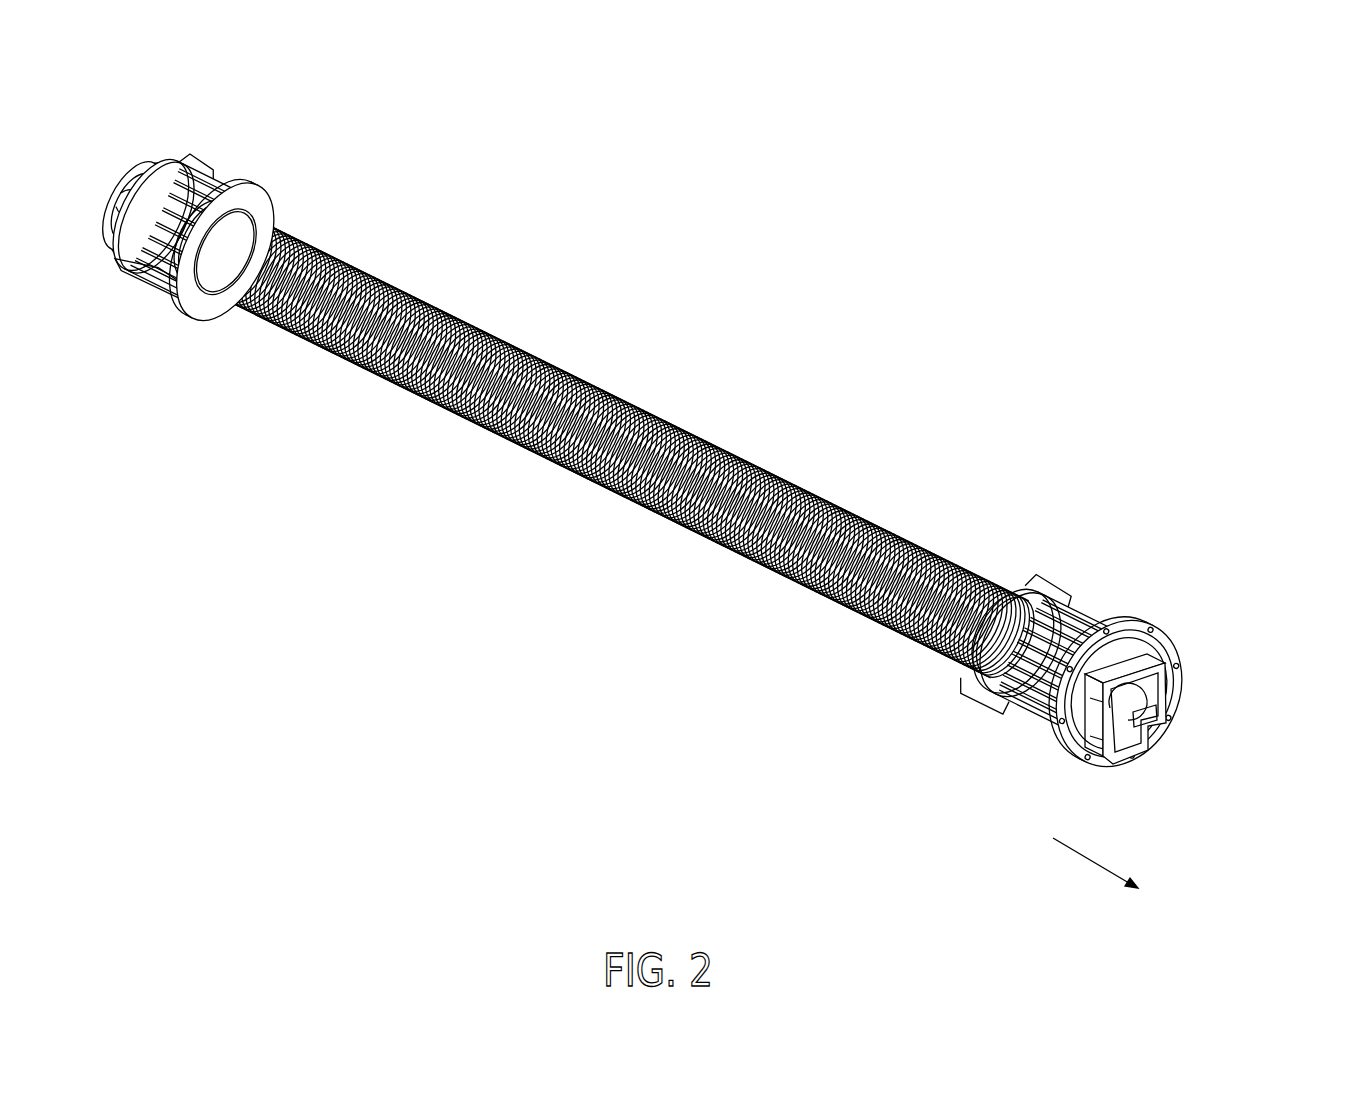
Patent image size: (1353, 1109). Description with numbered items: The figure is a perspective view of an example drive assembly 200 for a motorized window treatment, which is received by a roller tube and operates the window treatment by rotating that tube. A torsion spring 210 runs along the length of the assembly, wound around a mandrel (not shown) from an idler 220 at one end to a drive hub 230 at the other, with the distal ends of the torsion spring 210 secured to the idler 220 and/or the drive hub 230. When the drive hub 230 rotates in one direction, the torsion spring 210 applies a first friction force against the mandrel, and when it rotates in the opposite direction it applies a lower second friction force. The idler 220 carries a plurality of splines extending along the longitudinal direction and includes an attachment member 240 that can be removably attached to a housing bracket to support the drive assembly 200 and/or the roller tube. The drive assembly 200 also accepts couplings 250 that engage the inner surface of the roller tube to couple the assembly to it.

The drive assembly 200 is at (1073, 253).
The torsion spring 210 is at (622, 398).
The idler 220 is at (1090, 603).
The drive hub 230 is at (228, 178).
The attachment member 240 is at (1160, 733).
The coupling 250 is at (131, 165).